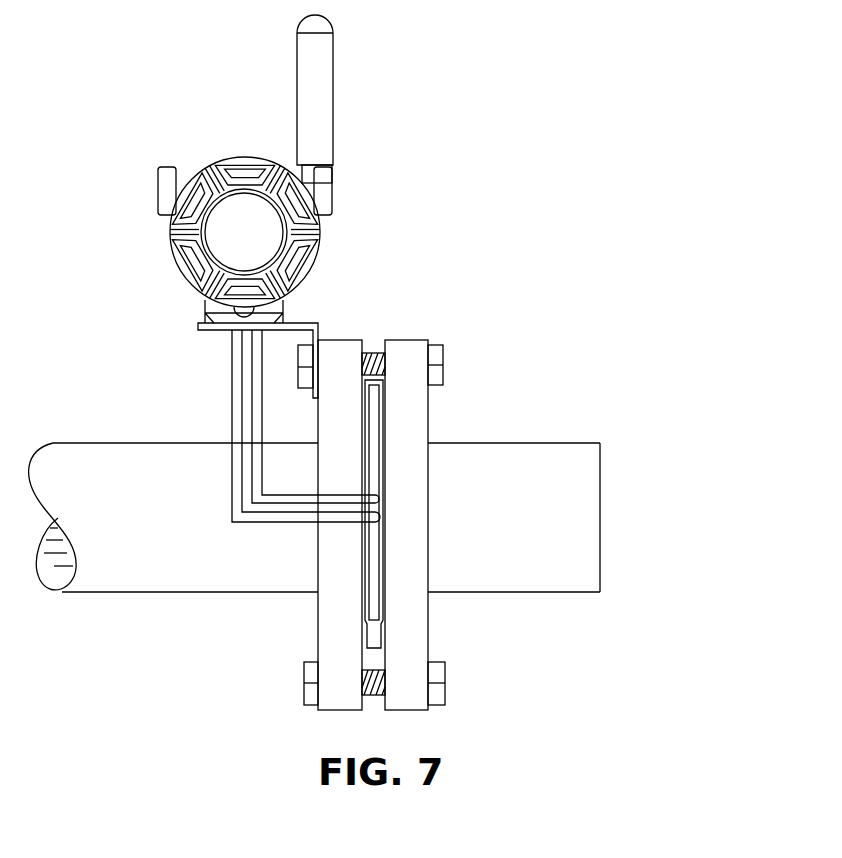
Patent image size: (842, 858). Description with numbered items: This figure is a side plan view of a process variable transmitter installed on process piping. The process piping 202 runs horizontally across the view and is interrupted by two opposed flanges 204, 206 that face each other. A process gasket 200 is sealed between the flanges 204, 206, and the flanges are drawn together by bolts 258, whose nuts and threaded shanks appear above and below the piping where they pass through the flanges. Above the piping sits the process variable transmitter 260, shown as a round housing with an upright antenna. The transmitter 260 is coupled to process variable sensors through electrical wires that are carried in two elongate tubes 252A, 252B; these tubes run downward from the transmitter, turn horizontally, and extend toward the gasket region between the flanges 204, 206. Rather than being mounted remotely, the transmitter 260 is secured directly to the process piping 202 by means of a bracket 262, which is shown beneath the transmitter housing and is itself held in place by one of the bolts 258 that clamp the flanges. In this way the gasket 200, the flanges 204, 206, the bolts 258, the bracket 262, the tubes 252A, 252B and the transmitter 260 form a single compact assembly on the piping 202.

The process gasket 200 is at (370, 403).
The process piping 202 is at (73, 462).
The flange 204 is at (335, 633).
The flange 206 is at (410, 433).
The elongate tube 252A is at (237, 384).
The elongate tube 252B is at (254, 358).
The bolts 258 is at (443, 358).
The process variable transmitter 260 is at (203, 165).
The bracket 262 is at (302, 323).